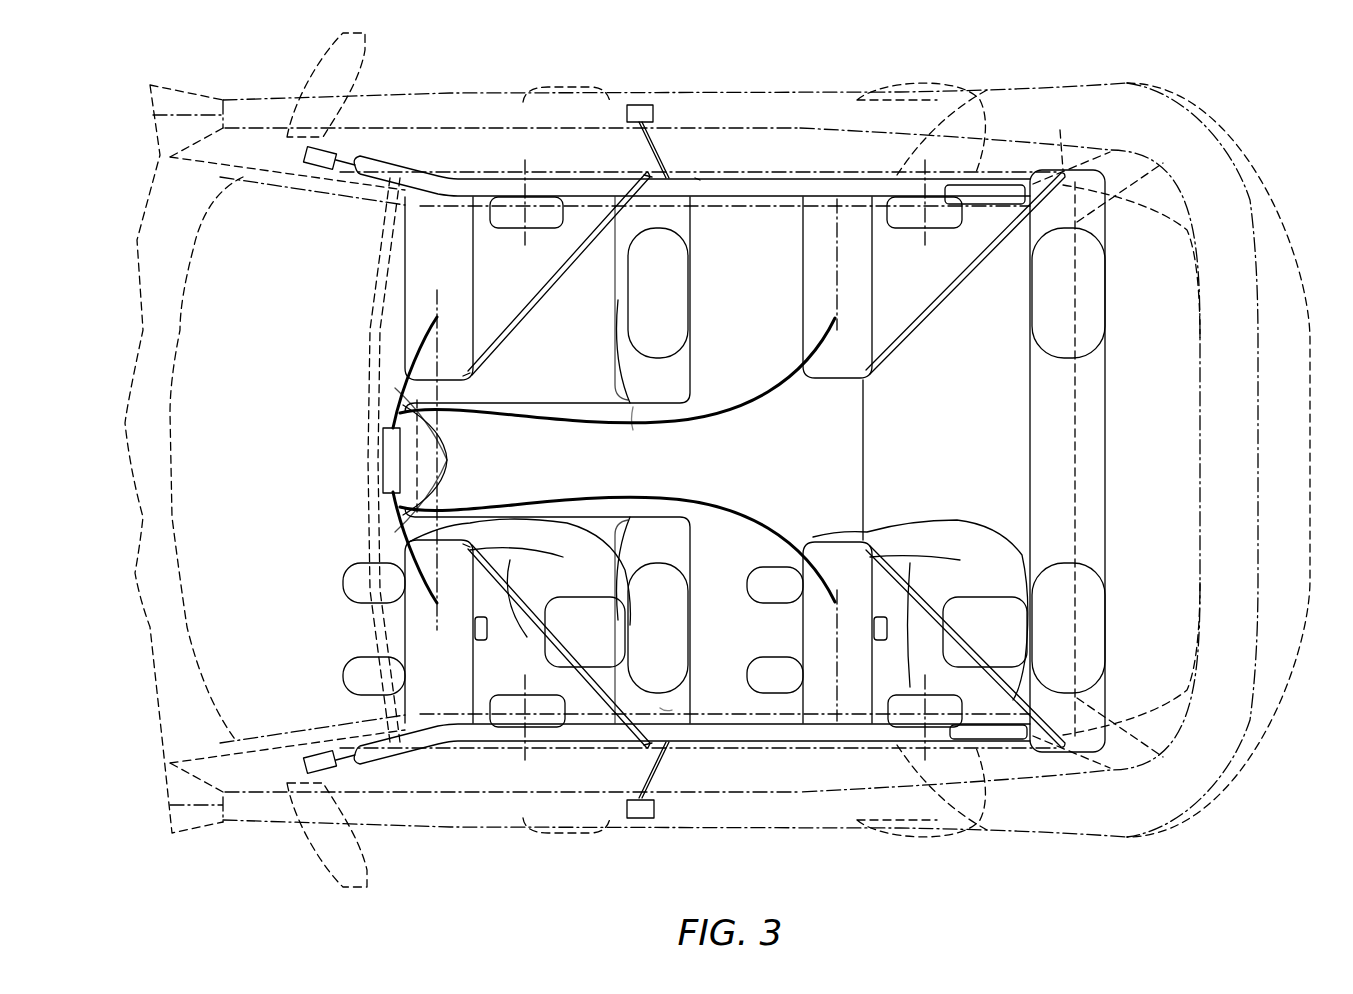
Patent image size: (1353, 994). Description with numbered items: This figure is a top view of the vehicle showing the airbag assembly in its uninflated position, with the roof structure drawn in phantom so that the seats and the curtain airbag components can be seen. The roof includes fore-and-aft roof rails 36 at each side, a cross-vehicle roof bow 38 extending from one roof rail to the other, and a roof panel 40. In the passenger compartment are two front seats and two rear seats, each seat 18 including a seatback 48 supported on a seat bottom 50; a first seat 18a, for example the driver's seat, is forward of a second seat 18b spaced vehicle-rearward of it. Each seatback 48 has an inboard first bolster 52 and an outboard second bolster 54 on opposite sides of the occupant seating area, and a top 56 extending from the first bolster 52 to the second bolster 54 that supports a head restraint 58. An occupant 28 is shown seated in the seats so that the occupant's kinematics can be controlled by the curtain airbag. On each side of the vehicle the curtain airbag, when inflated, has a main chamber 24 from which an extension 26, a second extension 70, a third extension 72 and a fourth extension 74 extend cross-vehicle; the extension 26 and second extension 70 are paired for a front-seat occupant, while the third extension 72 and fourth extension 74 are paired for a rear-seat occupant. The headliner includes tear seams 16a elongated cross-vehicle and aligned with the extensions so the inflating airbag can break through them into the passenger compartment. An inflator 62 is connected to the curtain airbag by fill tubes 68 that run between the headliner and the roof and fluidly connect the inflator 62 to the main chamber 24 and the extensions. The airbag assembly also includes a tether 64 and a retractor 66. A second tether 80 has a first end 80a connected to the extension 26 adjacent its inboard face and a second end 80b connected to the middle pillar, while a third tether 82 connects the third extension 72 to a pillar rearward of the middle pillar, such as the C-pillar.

The tear seam 16a is at (518, 212).
The seat 18 is at (703, 387).
The first seat 18a is at (665, 705).
The second seat 18b is at (1032, 443).
The main chamber 24 is at (742, 190).
The extension 26 is at (405, 283).
The occupant 28 is at (562, 535).
The roof rail 36 is at (697, 175).
The roof bow 38 is at (368, 335).
The roof panel 40 is at (943, 265).
The seatback 48 is at (690, 343).
The seat bottom 50 is at (588, 518).
The first bolster 52 is at (635, 518).
The second bolster 54 is at (633, 222).
The top 56 is at (667, 377).
The head restraint 58 is at (673, 288).
The inflator 62 is at (312, 165).
The tether 64 is at (662, 160).
The retractor 66 is at (640, 112).
The fill tube 68 is at (340, 163).
The second extension 70 is at (547, 212).
The third extension 72 is at (818, 212).
The fourth extension 74 is at (943, 212).
The second tether 80 is at (538, 295).
The first end 80a is at (467, 381).
The second end 80b is at (640, 173).
The third tether 82 is at (940, 305).